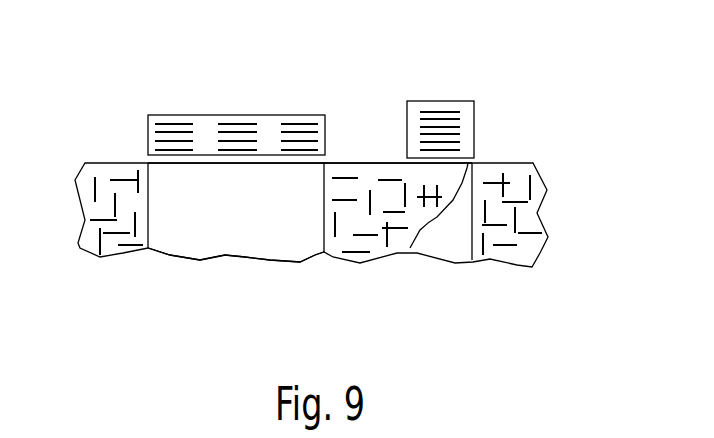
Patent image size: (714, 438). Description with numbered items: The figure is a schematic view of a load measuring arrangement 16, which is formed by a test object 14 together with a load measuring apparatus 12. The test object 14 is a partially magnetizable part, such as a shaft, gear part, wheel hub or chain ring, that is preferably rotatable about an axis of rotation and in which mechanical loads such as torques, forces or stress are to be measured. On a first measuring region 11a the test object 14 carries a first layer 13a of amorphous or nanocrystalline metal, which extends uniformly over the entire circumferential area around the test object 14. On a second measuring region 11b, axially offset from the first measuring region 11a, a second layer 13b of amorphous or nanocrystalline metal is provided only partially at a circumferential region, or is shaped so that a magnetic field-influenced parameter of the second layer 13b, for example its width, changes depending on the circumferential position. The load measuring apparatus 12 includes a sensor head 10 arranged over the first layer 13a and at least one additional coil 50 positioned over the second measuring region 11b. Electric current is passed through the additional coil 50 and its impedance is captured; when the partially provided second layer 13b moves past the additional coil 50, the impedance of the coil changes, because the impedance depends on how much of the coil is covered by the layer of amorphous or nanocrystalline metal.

The sensor head 10 is at (203, 125).
The first measuring region 11a is at (258, 270).
The second measuring region 11b is at (423, 265).
The load measuring apparatus 12 is at (140, 98).
The first layer 13a is at (212, 228).
The second layer 13b is at (448, 228).
The test object 14 is at (104, 163).
The load measuring arrangement 16 is at (505, 285).
The additional coil 50 is at (440, 102).